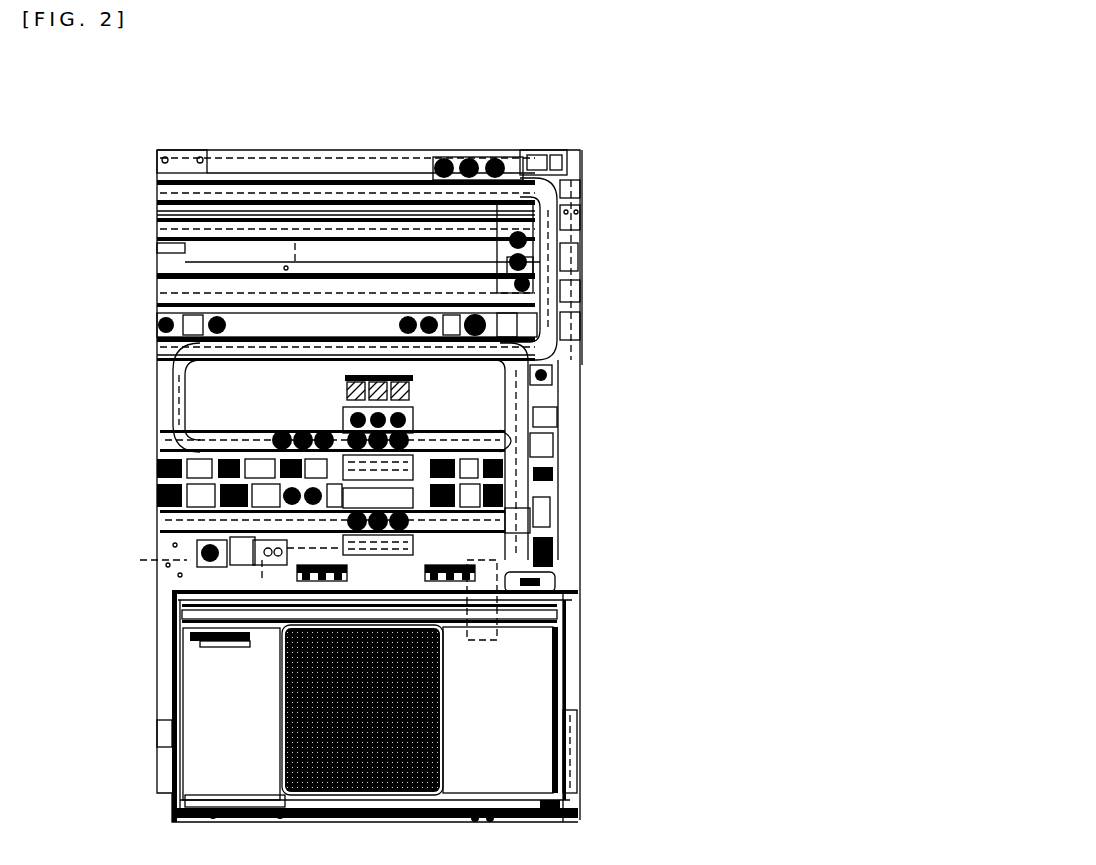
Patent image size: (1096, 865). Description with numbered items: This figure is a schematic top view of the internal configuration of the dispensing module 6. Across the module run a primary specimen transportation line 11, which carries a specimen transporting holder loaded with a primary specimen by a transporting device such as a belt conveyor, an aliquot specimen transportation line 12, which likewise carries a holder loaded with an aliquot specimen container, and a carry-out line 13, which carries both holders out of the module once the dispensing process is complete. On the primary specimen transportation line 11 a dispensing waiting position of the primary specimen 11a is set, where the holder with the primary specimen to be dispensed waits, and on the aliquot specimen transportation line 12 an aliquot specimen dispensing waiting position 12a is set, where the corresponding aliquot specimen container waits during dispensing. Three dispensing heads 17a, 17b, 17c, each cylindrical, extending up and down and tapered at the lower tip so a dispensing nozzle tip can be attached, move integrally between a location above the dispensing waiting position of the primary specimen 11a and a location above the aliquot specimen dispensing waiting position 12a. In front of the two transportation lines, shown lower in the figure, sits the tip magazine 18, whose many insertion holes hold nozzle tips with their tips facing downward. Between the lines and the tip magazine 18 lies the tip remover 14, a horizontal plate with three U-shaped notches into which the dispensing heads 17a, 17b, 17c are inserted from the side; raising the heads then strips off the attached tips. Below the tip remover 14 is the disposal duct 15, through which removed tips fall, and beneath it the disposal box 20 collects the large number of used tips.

The dispensing module 6 is at (233, 151).
The primary specimen transportation line 11 is at (160, 440).
The dispensing waiting position of the primary specimen 11a is at (545, 447).
The aliquot specimen transportation line 12 is at (160, 520).
The aliquot specimen dispensing waiting position 12a is at (520, 530).
The carry-out line 13 is at (553, 375).
The tip remover 14 is at (512, 583).
The disposal duct 15 is at (467, 586).
The dispensing head 17a is at (350, 376).
The dispensing head 17b is at (375, 376).
The dispensing head 17c is at (395, 376).
The tip magazine 18 is at (284, 686).
The disposal box 20 is at (265, 578).